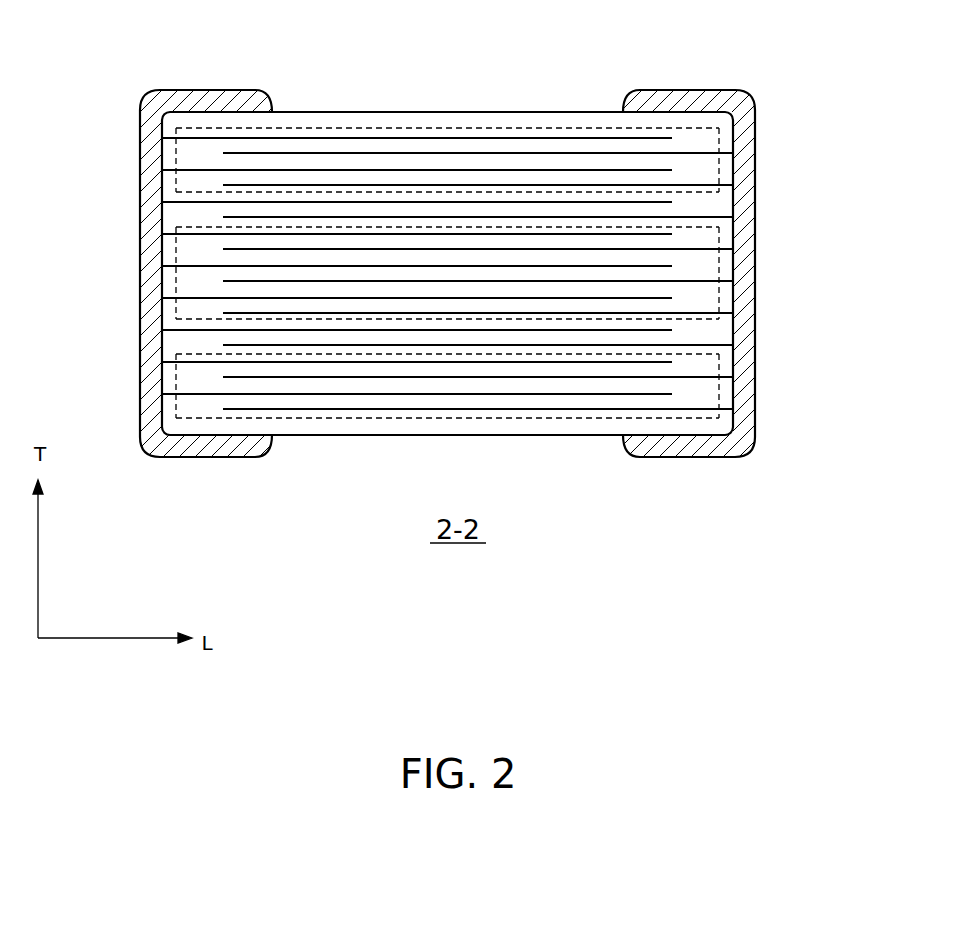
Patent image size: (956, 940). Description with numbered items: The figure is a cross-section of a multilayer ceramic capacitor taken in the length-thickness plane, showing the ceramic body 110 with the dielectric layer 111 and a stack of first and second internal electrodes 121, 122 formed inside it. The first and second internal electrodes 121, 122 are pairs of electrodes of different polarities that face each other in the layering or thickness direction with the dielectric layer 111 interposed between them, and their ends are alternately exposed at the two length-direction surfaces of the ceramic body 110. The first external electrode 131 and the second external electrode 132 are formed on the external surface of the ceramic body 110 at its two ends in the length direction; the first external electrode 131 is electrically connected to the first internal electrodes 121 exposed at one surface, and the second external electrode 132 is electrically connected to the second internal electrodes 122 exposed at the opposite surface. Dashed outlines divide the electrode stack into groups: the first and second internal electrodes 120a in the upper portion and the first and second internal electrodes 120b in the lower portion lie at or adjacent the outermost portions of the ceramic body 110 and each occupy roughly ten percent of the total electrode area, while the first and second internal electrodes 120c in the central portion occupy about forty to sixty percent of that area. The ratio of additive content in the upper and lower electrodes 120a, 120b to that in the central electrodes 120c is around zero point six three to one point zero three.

The ceramic body 110 is at (370, 110).
The dielectric layer 111 is at (670, 336).
The first and second internal electrodes disposed in an upper portion of the ceramic 120a is at (722, 130).
The first and second internal electrodes disposed in a lower portion of the ceramic 120b is at (722, 380).
The first and second internal electrodes disposed in a central portion of the cerami 120c is at (722, 246).
The first internal electrode 121 is at (200, 167).
The second internal electrode 122 is at (718, 410).
The first external electrode 131 is at (207, 98).
The second external electrode 132 is at (672, 102).